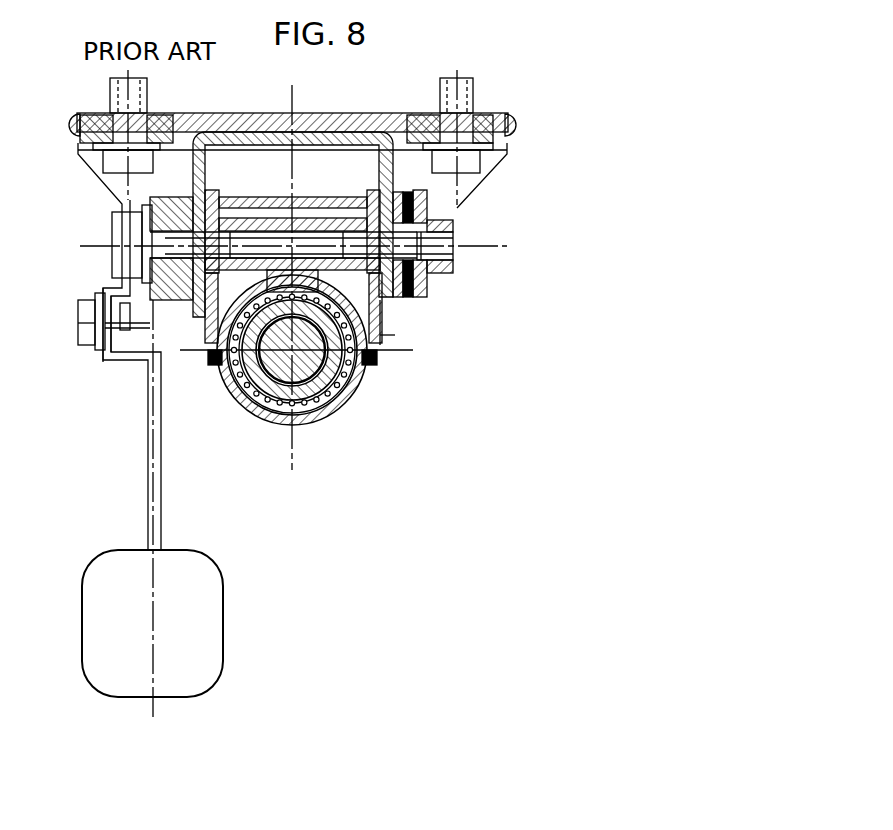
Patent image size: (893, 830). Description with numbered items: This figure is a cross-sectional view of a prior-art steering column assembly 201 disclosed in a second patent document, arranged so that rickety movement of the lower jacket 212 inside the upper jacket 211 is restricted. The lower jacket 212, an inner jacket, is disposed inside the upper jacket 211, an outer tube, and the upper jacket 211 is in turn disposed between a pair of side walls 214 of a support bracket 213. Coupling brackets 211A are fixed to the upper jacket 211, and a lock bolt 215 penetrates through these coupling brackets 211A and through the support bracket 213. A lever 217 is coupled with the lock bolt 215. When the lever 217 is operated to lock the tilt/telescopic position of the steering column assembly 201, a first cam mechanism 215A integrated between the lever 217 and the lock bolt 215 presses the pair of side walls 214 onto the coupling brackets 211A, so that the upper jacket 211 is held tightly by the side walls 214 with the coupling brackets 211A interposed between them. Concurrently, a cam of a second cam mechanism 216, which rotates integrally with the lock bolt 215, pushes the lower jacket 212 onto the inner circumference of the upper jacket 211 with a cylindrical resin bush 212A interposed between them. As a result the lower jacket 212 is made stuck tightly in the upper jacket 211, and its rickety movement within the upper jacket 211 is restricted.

The steering column assembly 201 is at (537, 117).
The support bracket 213 is at (492, 181).
The side walls 214 is at (394, 186).
The lock bolt 215 is at (452, 253).
The first cam mechanism 215A is at (182, 312).
The second cam mechanism 216 is at (396, 305).
The upper jacket 211 is at (267, 425).
The coupling brackets 211A is at (384, 335).
The cylindrical resin bush 212A is at (345, 385).
The lower jacket 212 is at (328, 403).
The lever 217 is at (208, 610).